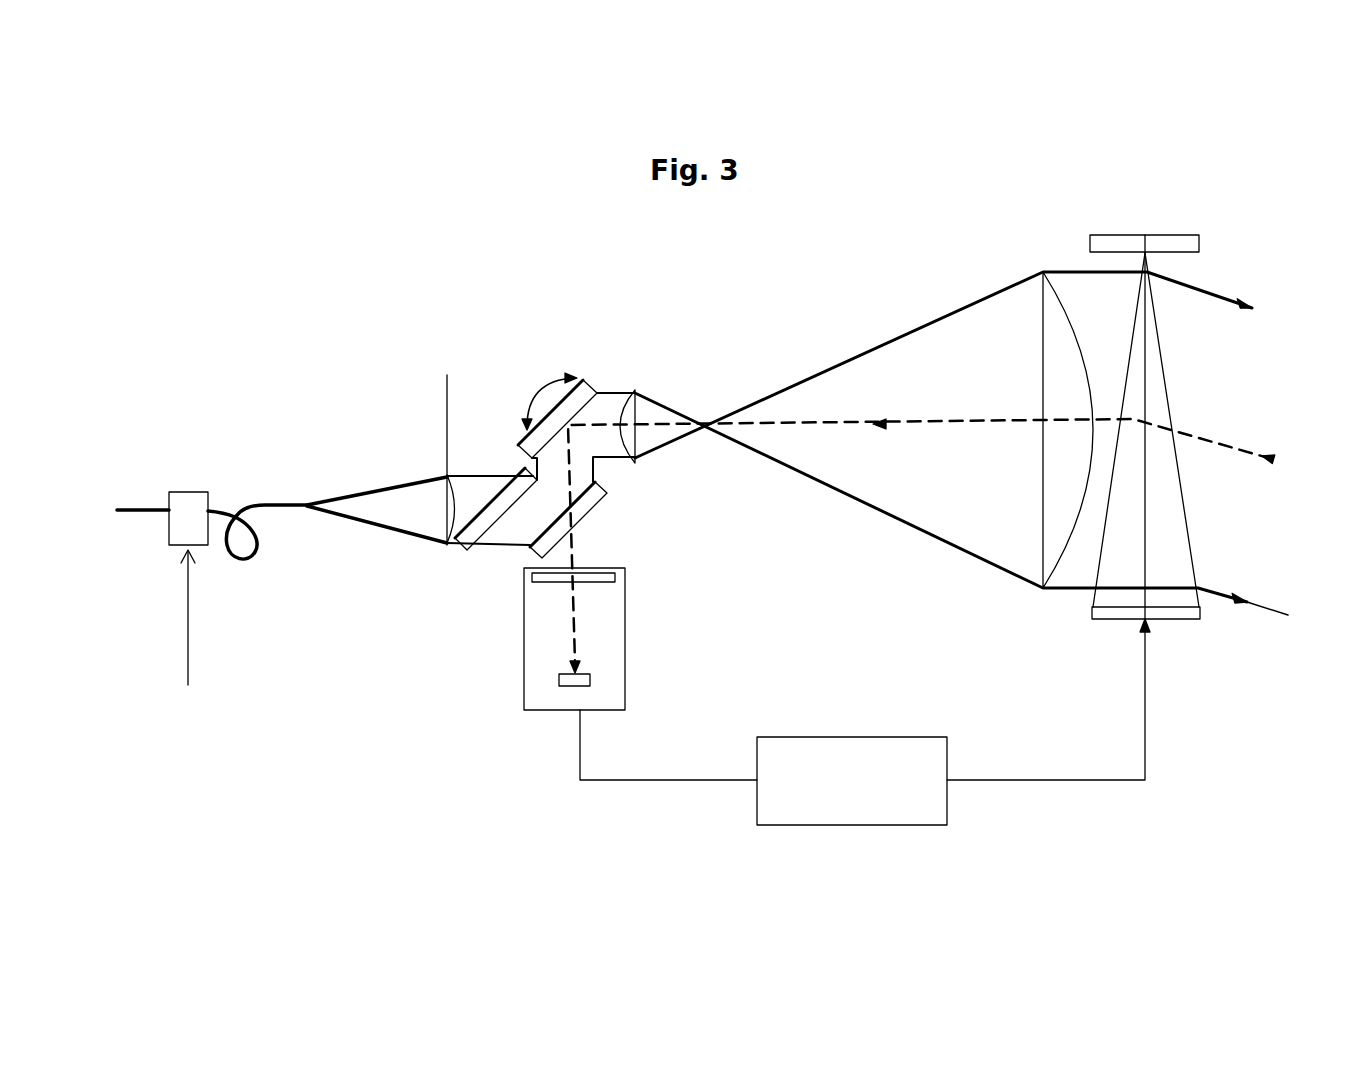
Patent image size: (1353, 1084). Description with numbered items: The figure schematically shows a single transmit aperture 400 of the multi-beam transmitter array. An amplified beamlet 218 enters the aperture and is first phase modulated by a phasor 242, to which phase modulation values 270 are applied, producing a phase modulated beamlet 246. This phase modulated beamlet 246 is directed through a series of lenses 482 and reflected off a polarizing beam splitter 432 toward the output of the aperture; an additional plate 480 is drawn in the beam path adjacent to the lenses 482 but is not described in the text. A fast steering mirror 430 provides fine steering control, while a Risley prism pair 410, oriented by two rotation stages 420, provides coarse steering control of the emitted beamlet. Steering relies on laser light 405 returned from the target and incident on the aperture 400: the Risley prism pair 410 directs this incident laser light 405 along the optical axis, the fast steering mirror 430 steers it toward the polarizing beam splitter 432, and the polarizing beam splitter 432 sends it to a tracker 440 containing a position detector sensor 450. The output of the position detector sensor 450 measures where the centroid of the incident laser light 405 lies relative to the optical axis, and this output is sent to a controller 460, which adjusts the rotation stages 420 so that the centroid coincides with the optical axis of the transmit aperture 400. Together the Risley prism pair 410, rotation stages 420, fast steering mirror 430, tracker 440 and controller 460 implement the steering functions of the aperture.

The transmit aperture 400 is at (410, 282).
The beamlet 218 is at (134, 507).
The phasor 242 is at (200, 492).
The phase modulated beamlet 246 is at (367, 490).
The phase modulation values 270 is at (191, 631).
The lenses 482 is at (449, 446).
The beam splitter 480 is at (533, 575).
The fast steering mirror 430 is at (595, 388).
The polarizing beam splitter 432 is at (588, 495).
The tracker 440 is at (622, 622).
The position detector sensor 450 is at (586, 677).
The controller 460 is at (875, 743).
The Risley prism pair 410 is at (1145, 318).
The rotation stages 420 is at (1183, 612).
The laser light 405 is at (1252, 462).